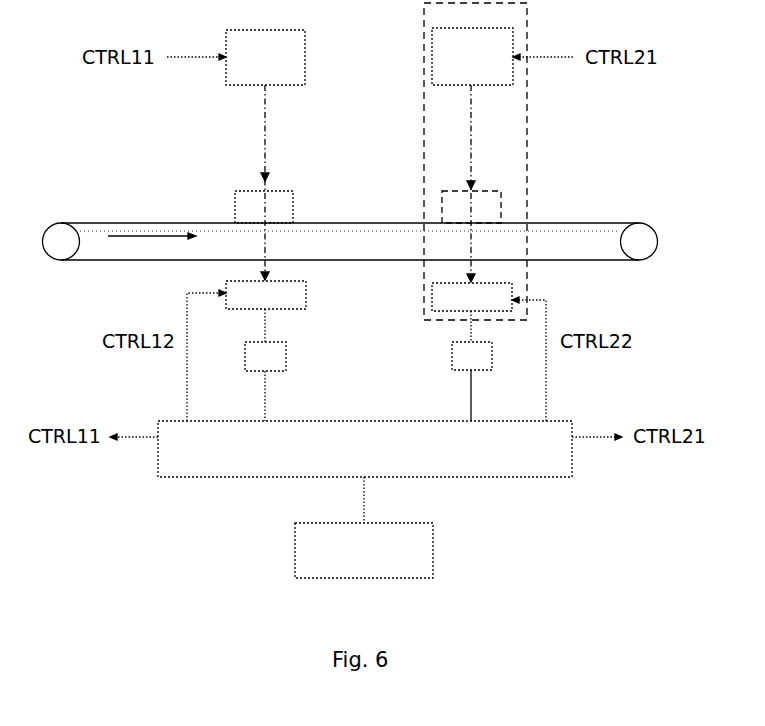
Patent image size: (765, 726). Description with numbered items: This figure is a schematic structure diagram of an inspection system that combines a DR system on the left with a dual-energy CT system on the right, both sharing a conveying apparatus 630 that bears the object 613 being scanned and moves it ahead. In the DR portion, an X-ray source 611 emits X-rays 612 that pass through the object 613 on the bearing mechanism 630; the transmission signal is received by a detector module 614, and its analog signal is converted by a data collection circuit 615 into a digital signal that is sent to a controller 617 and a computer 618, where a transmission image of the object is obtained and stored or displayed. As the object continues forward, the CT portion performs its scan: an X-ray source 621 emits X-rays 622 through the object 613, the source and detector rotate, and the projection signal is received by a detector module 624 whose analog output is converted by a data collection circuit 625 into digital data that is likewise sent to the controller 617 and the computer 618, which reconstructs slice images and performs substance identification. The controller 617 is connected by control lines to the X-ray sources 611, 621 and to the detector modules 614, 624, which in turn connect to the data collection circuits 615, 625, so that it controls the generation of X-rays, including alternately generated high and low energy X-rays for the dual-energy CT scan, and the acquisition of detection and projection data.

The X-ray source 611 is at (305, 57).
The X-rays 612 is at (265, 137).
The object being scanned 613 is at (293, 207).
The detector module 614 is at (306, 292).
The data collection circuit 615 is at (286, 357).
The controller 617 is at (178, 421).
The computer 618 is at (433, 550).
The X-ray source 621 is at (513, 42).
The X-rays 622 is at (471, 137).
The detector module 624 is at (512, 290).
The data collection circuit 625 is at (452, 355).
The conveying apparatus 630 is at (147, 261).